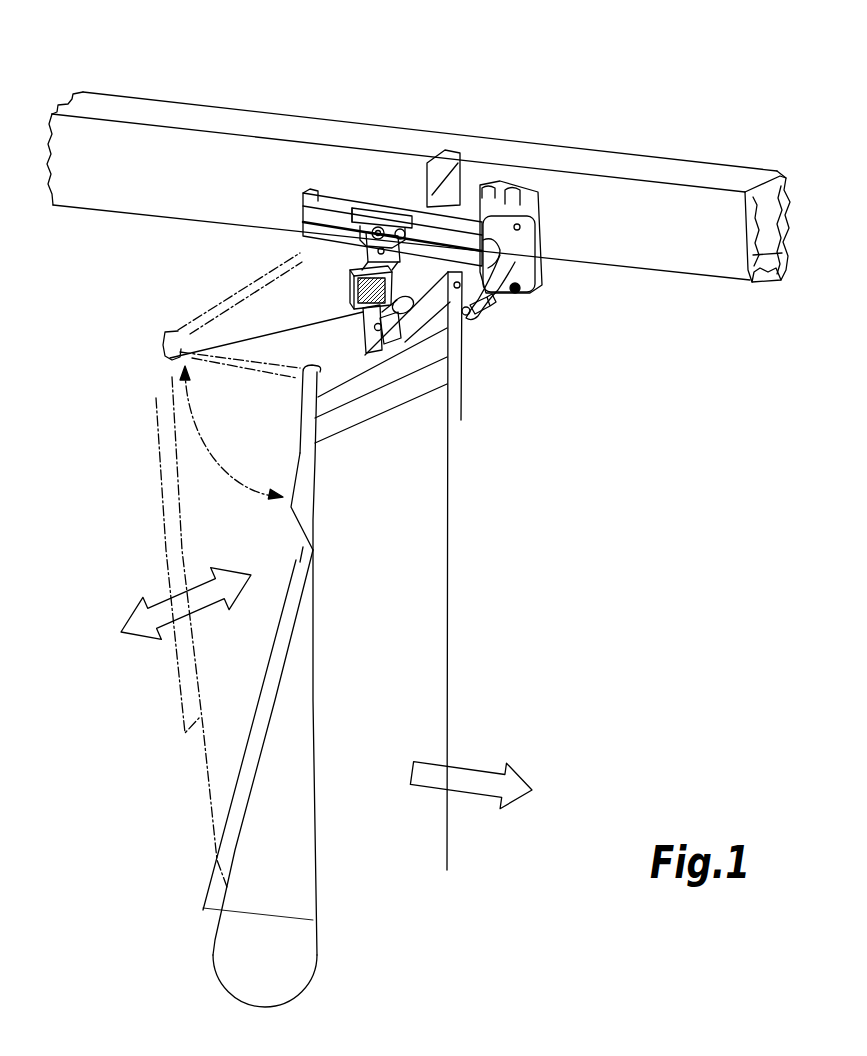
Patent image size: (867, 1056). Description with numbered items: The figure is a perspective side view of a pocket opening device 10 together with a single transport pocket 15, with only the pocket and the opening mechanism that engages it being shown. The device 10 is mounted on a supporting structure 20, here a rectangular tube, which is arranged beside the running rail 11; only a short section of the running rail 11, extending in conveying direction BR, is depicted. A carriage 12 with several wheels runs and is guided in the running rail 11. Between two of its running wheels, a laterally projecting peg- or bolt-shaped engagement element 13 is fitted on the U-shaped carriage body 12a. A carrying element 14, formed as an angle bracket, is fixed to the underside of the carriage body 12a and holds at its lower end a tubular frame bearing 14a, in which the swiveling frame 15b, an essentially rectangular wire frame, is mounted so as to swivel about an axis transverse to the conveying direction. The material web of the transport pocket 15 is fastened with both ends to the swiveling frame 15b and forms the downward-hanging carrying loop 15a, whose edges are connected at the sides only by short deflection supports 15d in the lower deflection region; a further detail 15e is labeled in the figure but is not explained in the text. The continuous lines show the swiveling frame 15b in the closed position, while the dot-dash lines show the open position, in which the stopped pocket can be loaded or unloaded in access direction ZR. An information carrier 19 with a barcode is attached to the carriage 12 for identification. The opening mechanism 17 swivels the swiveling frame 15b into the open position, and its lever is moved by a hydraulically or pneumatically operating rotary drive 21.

The pocket opening device 10 is at (682, 495).
The running rail 11 is at (362, 200).
The carriage 12 is at (388, 212).
The carriage body 12a is at (345, 240).
The engagement element 13 is at (355, 215).
The carrying element 14 is at (168, 359).
The frame bearing 14a is at (377, 333).
The transport pocket 15 is at (470, 655).
The carrying loop 15a is at (215, 967).
The swiveling frame 15b is at (287, 470).
The deflection supports 15d is at (277, 950).
The side flap 15e is at (237, 774).
The opening mechanism 17 is at (510, 310).
The information carrier 19 is at (332, 288).
The supporting structure 20 is at (625, 168).
The rotary drive 21 is at (543, 258).